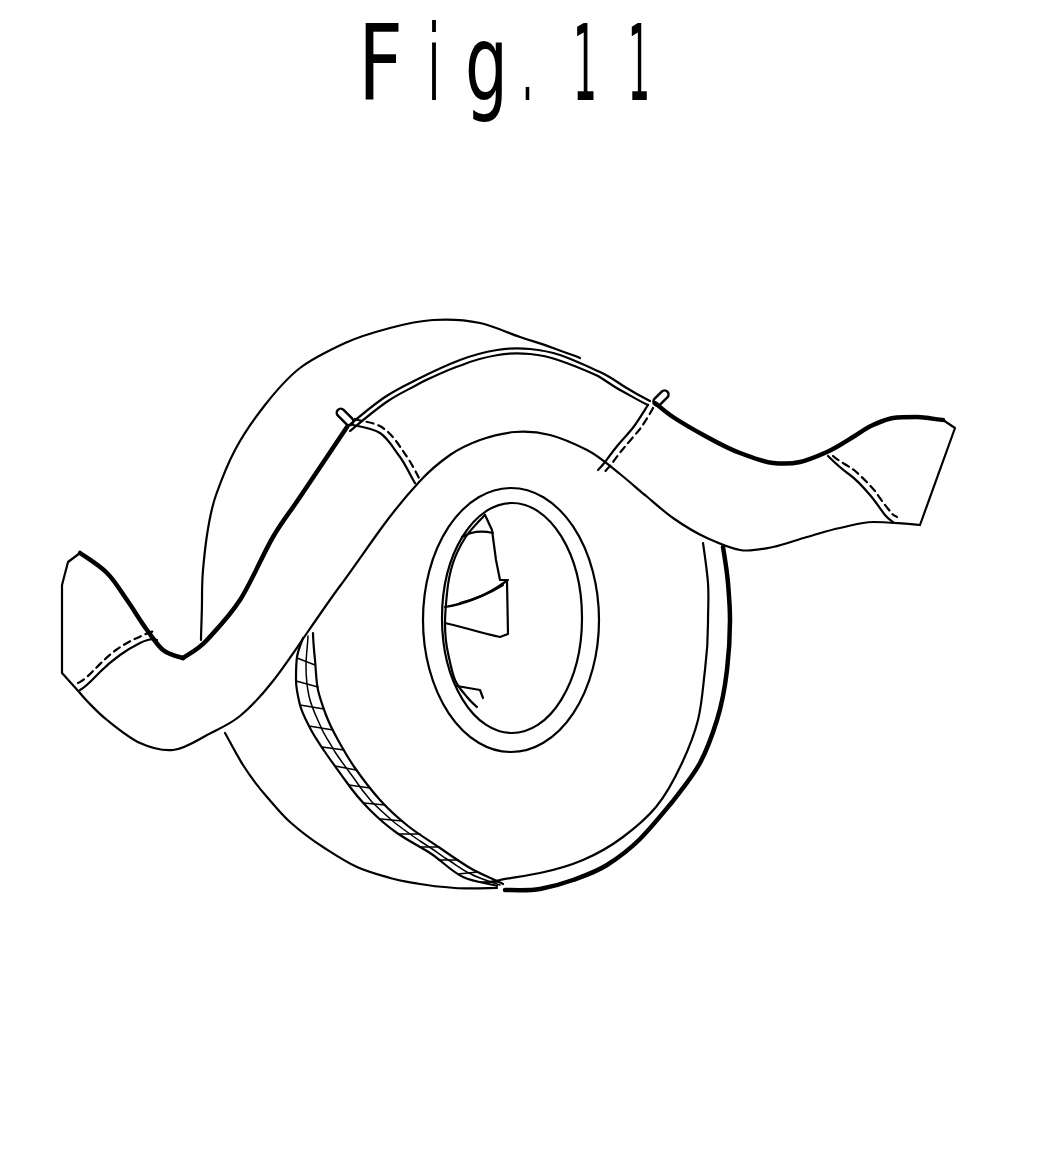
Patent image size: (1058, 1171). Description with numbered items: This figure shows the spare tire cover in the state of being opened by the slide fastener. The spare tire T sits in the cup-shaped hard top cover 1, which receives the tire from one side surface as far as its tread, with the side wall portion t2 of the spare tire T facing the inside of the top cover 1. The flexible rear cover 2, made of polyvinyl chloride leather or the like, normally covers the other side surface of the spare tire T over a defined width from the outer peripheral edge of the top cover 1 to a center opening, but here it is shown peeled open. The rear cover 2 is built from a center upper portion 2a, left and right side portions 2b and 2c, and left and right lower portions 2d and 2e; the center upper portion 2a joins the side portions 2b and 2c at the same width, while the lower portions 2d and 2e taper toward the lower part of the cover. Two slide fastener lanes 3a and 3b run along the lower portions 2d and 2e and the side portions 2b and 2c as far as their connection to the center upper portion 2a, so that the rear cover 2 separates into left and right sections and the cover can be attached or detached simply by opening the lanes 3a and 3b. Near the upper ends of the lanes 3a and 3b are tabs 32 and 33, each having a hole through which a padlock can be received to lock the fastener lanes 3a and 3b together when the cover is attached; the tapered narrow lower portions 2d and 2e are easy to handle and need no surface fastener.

The top cover 1 is at (333, 843).
The rear cover 2 is at (506, 532).
The center upper portion 2a is at (477, 380).
The left side portion 2b is at (160, 733).
The right side portion 2c is at (747, 483).
The left lower portion 2d is at (77, 577).
The right lower portion 2e is at (913, 427).
The slide fastener lane 3a is at (270, 532).
The slide fastener lane 3b is at (833, 447).
The tab 32 is at (337, 410).
The tab 33 is at (665, 392).
The spare tire T is at (633, 785).
The side wall portion t2 is at (467, 843).